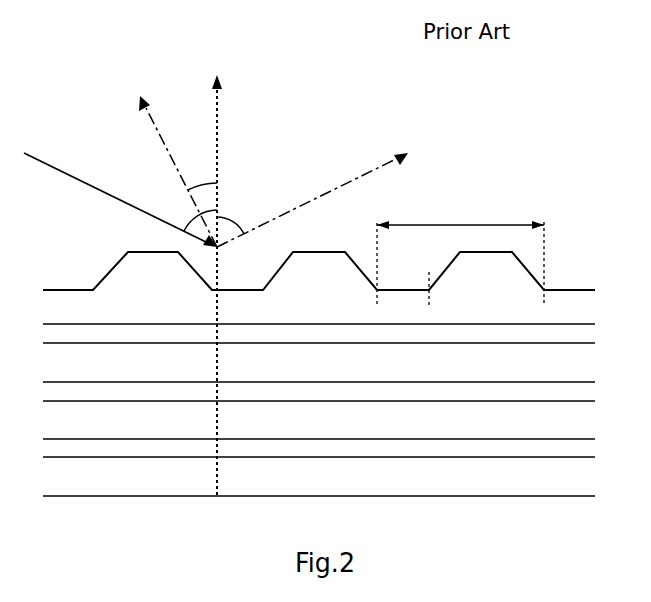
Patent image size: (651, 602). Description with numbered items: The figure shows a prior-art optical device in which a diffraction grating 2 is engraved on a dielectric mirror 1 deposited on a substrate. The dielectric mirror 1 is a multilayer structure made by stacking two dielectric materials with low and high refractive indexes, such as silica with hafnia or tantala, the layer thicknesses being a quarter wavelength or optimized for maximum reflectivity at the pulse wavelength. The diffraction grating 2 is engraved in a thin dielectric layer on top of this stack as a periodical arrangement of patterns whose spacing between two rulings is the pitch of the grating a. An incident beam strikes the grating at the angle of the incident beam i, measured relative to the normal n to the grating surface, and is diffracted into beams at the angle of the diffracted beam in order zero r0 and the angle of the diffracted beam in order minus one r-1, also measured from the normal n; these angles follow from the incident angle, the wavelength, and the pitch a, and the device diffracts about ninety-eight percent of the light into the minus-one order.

The dielectric mirror 1 is at (608, 311).
The diffraction grating 2 is at (343, 254).
The pitch of the grating a is at (460, 253).
The normal n is at (227, 285).
The angle of the incident beam i is at (120, 200).
The angle of the diffracted beam in order zero r0 is at (312, 200).
The angle of the diffracted beam in order minus one r-1 is at (178, 171).